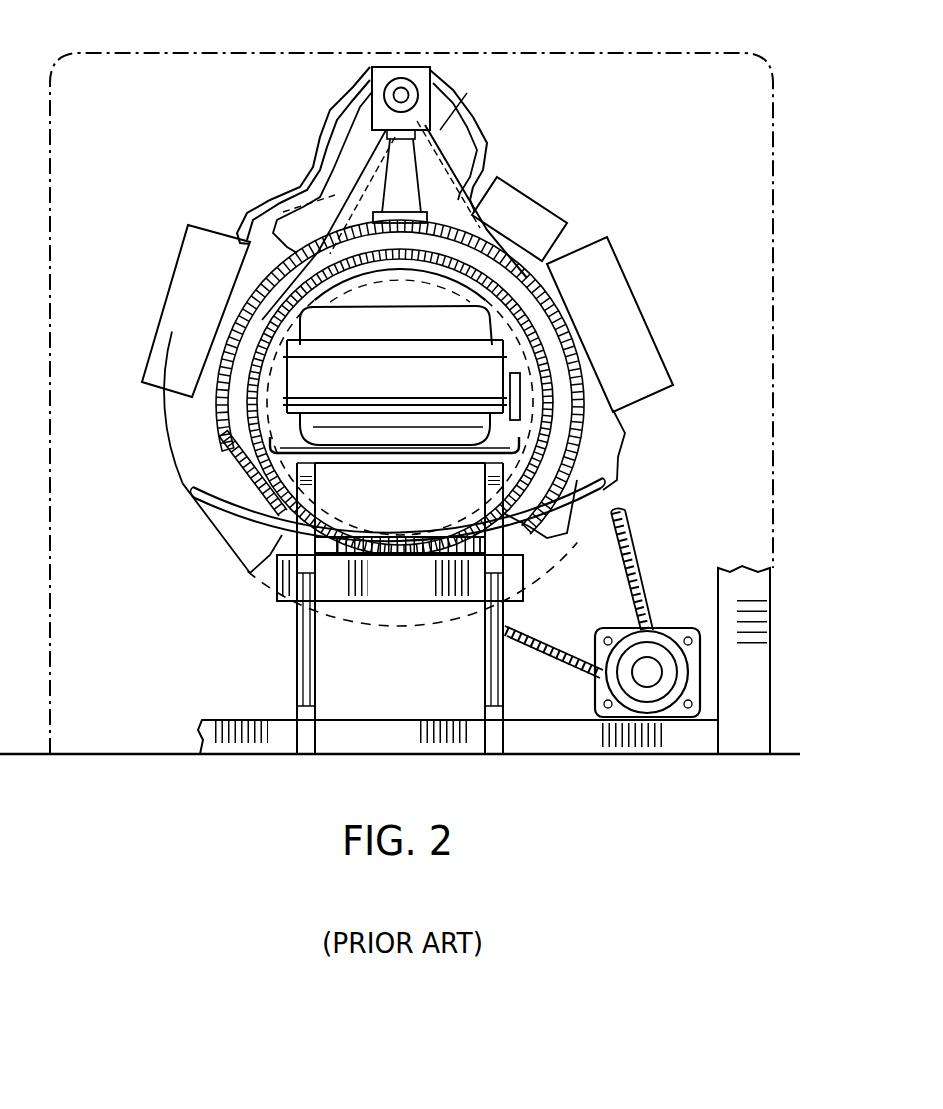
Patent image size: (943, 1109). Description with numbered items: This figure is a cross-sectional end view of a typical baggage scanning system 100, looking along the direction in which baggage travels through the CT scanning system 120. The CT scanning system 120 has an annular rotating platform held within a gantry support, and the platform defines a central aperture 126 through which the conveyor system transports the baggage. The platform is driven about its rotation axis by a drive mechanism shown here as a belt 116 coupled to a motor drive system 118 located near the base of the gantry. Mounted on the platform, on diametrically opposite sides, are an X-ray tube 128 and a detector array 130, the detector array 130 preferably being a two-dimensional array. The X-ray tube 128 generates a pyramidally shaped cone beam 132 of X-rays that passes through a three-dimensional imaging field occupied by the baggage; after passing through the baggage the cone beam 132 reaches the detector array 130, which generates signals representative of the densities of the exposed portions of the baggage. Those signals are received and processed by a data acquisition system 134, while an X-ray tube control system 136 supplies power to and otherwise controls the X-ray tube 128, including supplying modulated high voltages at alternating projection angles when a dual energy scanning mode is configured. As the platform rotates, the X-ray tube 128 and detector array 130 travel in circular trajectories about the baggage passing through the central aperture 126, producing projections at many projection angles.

The baggage scanning system 100 is at (182, 801).
The belt 116 is at (633, 538).
The motor drive system 118 is at (650, 665).
The CT scanning system 120 is at (137, 41).
The central aperture 126 is at (424, 504).
The X-ray tube 128 is at (383, 72).
The detector array 130 is at (207, 470).
The cone beam 132 is at (587, 463).
The data acquisition system 134 is at (277, 580).
The X-ray tube control system 136 is at (182, 273).